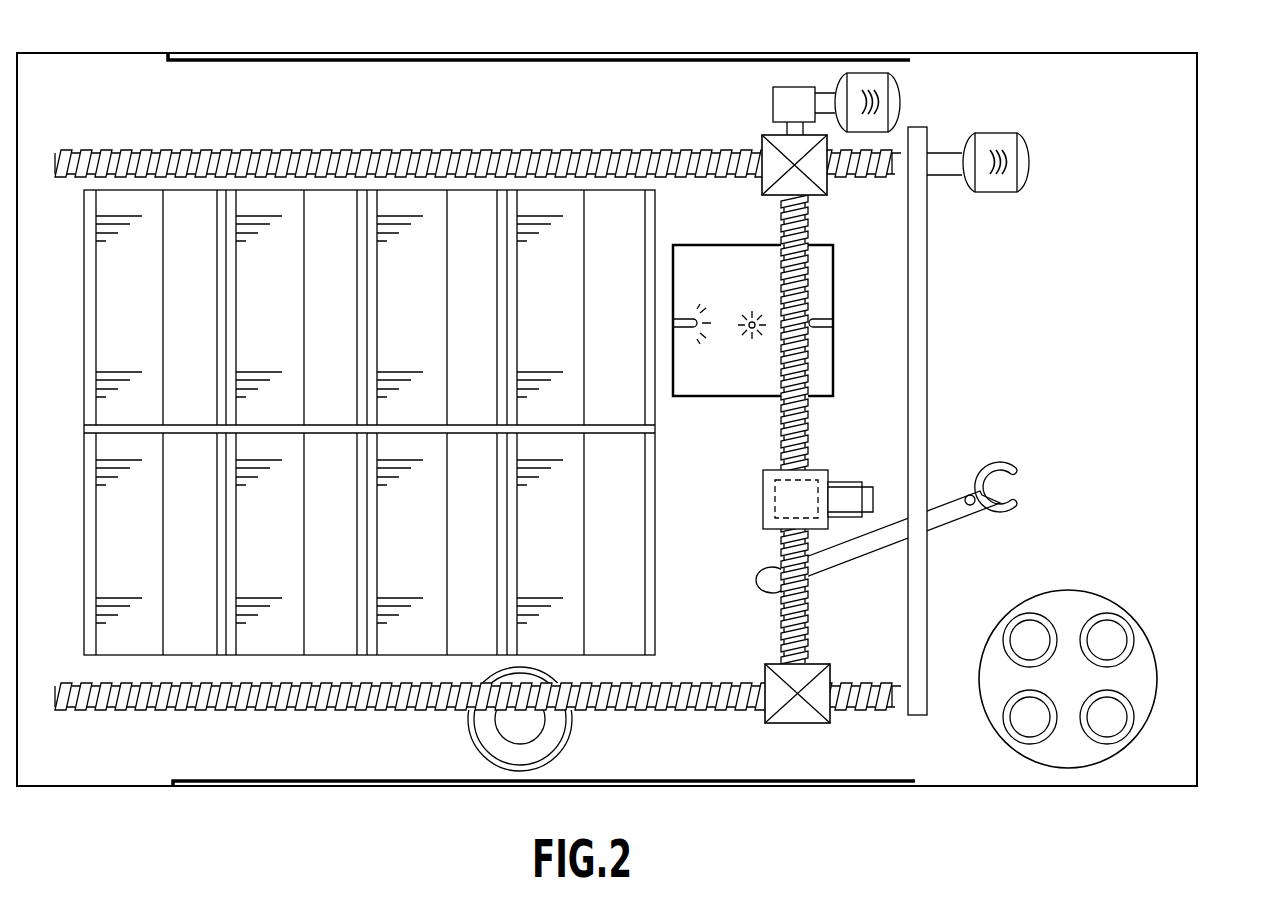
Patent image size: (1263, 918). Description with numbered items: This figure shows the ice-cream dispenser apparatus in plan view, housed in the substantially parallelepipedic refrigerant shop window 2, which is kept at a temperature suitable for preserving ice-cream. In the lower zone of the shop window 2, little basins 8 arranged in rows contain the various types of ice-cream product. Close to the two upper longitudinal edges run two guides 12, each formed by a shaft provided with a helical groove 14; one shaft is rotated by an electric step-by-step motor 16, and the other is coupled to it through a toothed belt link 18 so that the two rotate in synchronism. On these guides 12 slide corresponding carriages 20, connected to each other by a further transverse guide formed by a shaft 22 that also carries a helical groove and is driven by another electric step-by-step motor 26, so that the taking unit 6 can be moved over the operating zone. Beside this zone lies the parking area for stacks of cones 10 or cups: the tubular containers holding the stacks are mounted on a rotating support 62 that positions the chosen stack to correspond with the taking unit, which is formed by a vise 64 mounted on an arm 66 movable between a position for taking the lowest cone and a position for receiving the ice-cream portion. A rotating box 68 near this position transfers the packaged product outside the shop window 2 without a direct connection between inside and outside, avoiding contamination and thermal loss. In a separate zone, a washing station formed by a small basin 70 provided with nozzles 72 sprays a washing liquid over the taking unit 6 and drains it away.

The refrigerant shop window 2 is at (1205, 205).
The little basins 8 is at (193, 195).
The stacks of cones 10 is at (1147, 632).
The guides 12 is at (665, 712).
The helical groove 14 is at (718, 706).
The electric step-by-step motor 16 is at (990, 132).
The toothed belt link 18 is at (928, 381).
The carriages 20 is at (812, 723).
The transverse guide shaft 22 is at (800, 223).
The electric step-by-step motor 26 is at (858, 72).
The taking unit 6 is at (851, 481).
The rotating support 62 is at (1070, 591).
The vise 64 is at (988, 462).
The arm 66 is at (866, 558).
The rotating box 68 is at (500, 763).
The small basin 70 is at (734, 246).
The nozzles 72 is at (694, 323).